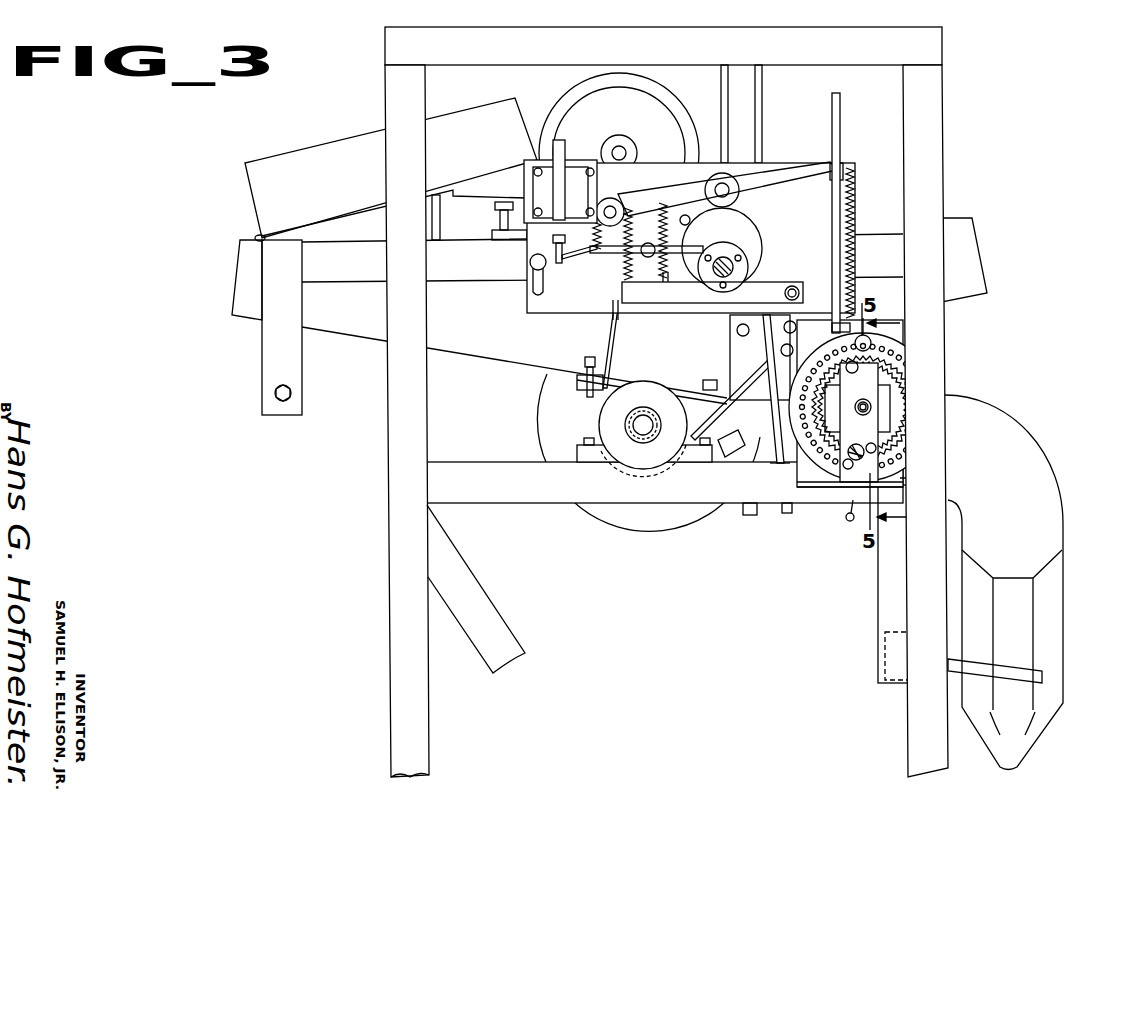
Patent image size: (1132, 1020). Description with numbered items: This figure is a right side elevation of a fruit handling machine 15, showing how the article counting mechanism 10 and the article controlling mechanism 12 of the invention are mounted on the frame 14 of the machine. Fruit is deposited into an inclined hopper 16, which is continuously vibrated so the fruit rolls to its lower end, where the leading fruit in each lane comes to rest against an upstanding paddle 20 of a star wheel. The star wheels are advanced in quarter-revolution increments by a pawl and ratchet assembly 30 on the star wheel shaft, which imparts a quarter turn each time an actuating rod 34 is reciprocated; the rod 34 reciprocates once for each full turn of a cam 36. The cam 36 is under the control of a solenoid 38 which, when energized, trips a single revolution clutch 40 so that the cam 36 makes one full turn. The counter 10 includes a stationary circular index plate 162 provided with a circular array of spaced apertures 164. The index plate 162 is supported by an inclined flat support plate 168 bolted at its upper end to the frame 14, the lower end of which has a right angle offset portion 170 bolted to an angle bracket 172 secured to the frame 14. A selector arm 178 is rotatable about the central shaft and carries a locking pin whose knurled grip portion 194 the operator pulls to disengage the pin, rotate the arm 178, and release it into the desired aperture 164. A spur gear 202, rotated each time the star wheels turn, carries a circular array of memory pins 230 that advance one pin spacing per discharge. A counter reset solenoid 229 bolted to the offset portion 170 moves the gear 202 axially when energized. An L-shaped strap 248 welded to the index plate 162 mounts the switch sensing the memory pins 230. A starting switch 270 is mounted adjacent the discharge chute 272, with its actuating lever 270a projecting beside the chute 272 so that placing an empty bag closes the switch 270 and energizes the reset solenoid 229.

The article counting mechanism 10 is at (901, 426).
The article controlling mechanism 12 is at (1021, 415).
The frame 14 is at (782, 27).
The fruit handling machine 15 is at (220, 238).
The inclined hopper 16 is at (247, 290).
The paddle 20 is at (848, 521).
The pawl and ratchet assembly 30 is at (913, 485).
The actuating rod 34 is at (840, 110).
The cam 36 is at (740, 222).
The solenoid 38 is at (548, 185).
The single revolution clutch 40 is at (727, 247).
The index plate 162 is at (930, 430).
The apertures 164 is at (903, 460).
The support plate 168 is at (783, 465).
The right angle offset portion 170 is at (747, 400).
The angle bracket 172 is at (743, 463).
The selector arm 178 is at (897, 310).
The knurled grip portion 194 is at (855, 343).
The spur gear 202 is at (907, 440).
The counter reset solenoid 229 is at (747, 450).
The memory pins 230 is at (913, 410).
The L-shaped strap 248 is at (857, 472).
The starting switch 270 is at (885, 652).
The actuating lever 270a is at (1023, 672).
The discharge chute 272 is at (1045, 710).